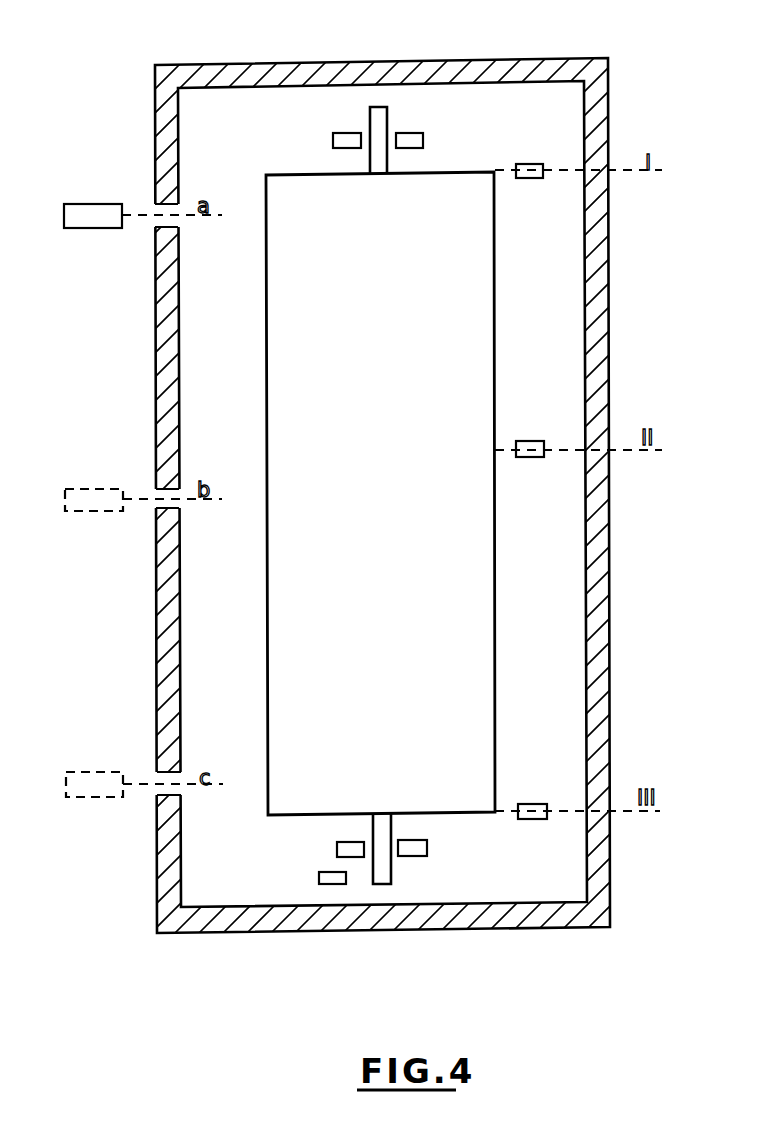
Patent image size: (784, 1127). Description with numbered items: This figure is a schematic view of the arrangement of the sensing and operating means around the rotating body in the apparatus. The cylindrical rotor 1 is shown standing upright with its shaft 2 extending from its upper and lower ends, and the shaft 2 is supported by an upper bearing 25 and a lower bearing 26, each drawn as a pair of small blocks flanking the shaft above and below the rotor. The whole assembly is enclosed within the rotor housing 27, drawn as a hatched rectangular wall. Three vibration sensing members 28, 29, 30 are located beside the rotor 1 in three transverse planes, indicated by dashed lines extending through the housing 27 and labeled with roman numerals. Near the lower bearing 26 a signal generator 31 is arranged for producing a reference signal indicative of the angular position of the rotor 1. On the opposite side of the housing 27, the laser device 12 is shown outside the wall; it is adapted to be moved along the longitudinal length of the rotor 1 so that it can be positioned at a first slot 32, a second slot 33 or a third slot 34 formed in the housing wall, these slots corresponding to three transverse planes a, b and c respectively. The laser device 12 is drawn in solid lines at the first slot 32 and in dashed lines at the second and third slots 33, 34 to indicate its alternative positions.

The cylindrical rotor 1 is at (495, 281).
The shaft 2 is at (376, 112).
The laser device 12 is at (92, 212).
The upper bearing 25 is at (333, 140).
The lower bearing 26 is at (337, 848).
The rotor housing 27 is at (598, 258).
The vibration sensing member 28 is at (532, 164).
The vibration sensing member 29 is at (530, 441).
The vibration sensing member 30 is at (532, 804).
The signal generator 31 is at (318, 878).
The first slot 32 is at (160, 221).
The second slot 33 is at (160, 505).
The third slot 34 is at (160, 793).